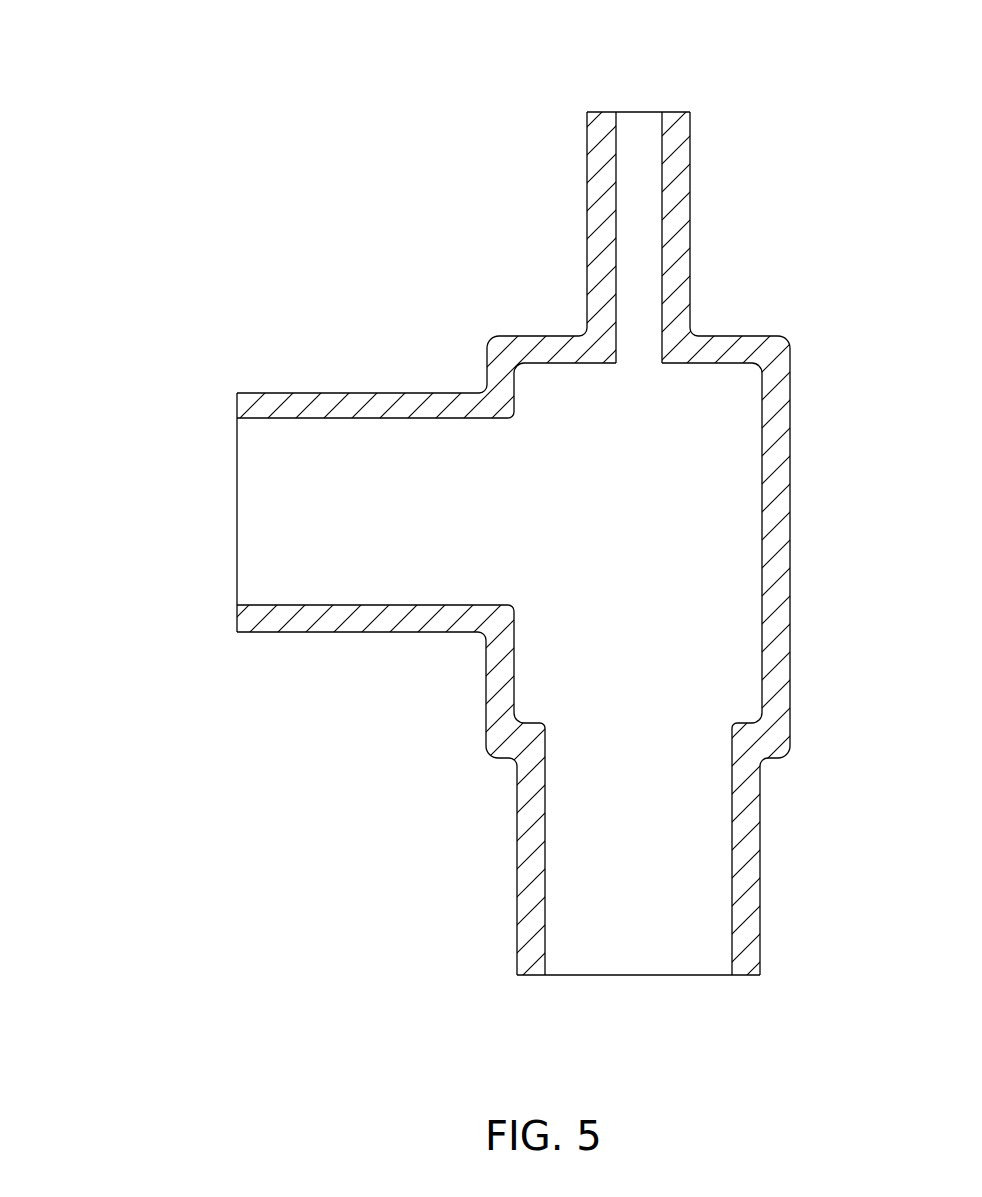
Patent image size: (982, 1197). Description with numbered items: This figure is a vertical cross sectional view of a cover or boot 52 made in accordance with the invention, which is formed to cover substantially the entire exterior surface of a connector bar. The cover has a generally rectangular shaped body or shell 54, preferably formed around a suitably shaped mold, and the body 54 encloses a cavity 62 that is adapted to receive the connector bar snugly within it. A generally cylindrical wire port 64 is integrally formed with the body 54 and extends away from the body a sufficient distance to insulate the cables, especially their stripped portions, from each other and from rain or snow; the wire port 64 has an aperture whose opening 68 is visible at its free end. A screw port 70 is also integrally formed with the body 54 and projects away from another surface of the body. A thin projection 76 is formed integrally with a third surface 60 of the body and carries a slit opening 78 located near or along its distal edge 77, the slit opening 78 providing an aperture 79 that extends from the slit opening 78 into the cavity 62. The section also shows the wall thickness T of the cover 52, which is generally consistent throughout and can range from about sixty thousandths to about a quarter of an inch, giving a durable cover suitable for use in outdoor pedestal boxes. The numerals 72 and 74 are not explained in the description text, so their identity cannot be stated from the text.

The cover or boot 52 is at (446, 812).
The body or shell 54 is at (777, 742).
The third surface 60 is at (760, 337).
The cavity 62 is at (450, 617).
The wire port 64 is at (525, 902).
The opening 68 is at (588, 977).
The screw port 70 is at (372, 405).
The branch bore 72 is at (320, 448).
The branch end 74 is at (233, 467).
The thin projection 76 is at (683, 215).
The distal edge 77 is at (675, 110).
The slit opening 78 is at (630, 110).
The aperture 79 is at (647, 160).
The thickness T is at (717, 479).